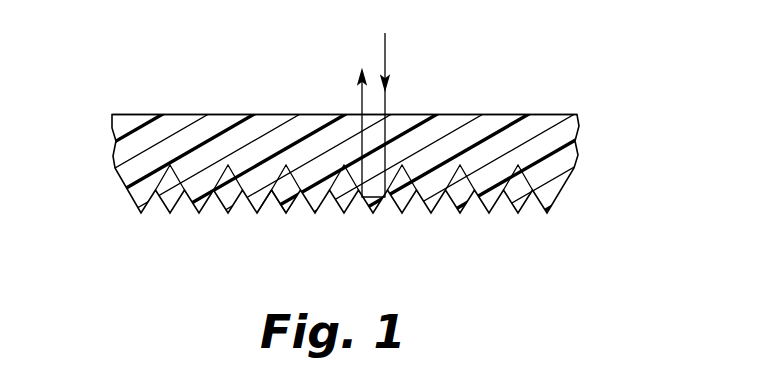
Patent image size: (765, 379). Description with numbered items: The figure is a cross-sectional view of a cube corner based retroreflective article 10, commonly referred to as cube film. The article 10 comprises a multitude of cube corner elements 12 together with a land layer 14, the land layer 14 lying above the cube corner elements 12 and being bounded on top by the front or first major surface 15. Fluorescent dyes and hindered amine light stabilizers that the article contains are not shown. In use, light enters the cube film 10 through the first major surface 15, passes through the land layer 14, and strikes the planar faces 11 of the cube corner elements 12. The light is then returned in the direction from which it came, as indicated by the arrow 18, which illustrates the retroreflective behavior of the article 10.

The retroreflective article 10 is at (526, 57).
The planar faces 11 is at (428, 213).
The cube corner elements 12 is at (303, 216).
The land layer 14 is at (102, 114).
The first major surface 15 is at (562, 114).
The arrow 18 is at (385, 45).